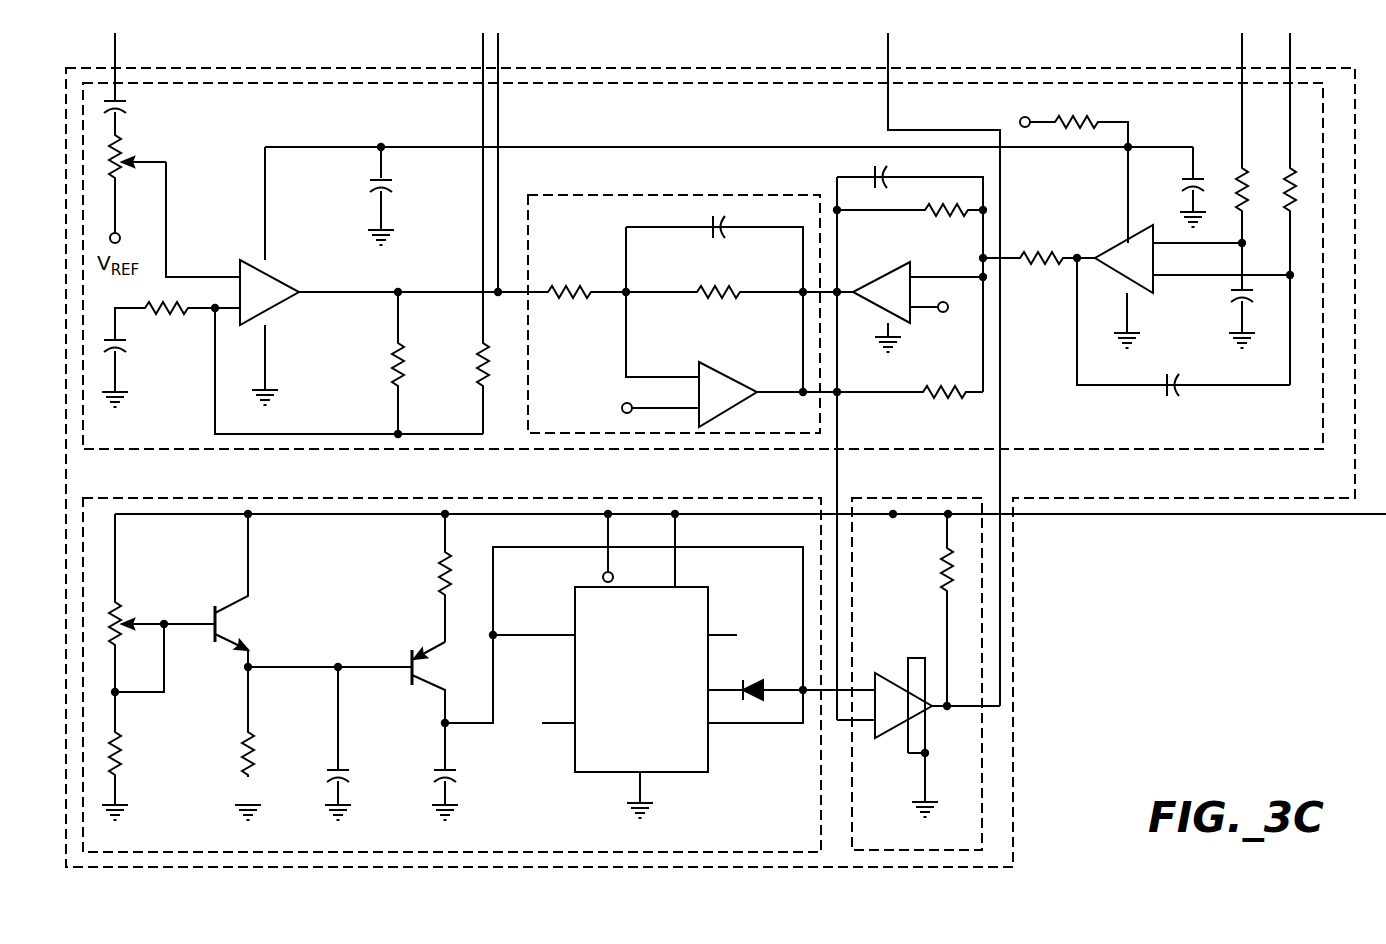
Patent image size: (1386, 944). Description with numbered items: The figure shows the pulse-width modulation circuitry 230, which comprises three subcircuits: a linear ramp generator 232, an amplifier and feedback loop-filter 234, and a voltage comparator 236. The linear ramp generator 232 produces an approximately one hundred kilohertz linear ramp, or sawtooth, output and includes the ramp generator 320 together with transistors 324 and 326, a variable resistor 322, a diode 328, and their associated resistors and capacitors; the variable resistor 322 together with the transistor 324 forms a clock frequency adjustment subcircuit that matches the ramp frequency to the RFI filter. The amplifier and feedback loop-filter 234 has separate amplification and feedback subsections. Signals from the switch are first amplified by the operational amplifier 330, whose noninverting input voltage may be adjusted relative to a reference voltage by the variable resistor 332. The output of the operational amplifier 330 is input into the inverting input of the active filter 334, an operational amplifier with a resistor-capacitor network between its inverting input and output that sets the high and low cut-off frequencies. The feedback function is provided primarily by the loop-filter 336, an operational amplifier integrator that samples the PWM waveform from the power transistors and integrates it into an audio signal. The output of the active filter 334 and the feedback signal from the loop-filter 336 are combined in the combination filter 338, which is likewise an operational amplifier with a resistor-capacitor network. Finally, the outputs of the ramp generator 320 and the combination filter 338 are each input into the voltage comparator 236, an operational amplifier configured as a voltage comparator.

The pulse-width modulation circuitry 230 is at (1015, 575).
The linear ramp generator 232 is at (708, 498).
The amplifier and feedback loop-filter 234 is at (1127, 450).
The voltage comparator 236 is at (883, 498).
The ramp generator 320 is at (575, 605).
The variable resistor 322 is at (120, 599).
The transistor 324 is at (224, 628).
The transistor 326 is at (412, 655).
The diode 328 is at (751, 676).
The operational amplifier 330 is at (283, 272).
The variable resistor 332 is at (152, 130).
The active filter 334 is at (613, 194).
The loop-filter 336 is at (1115, 237).
The combination filter 338 is at (900, 264).